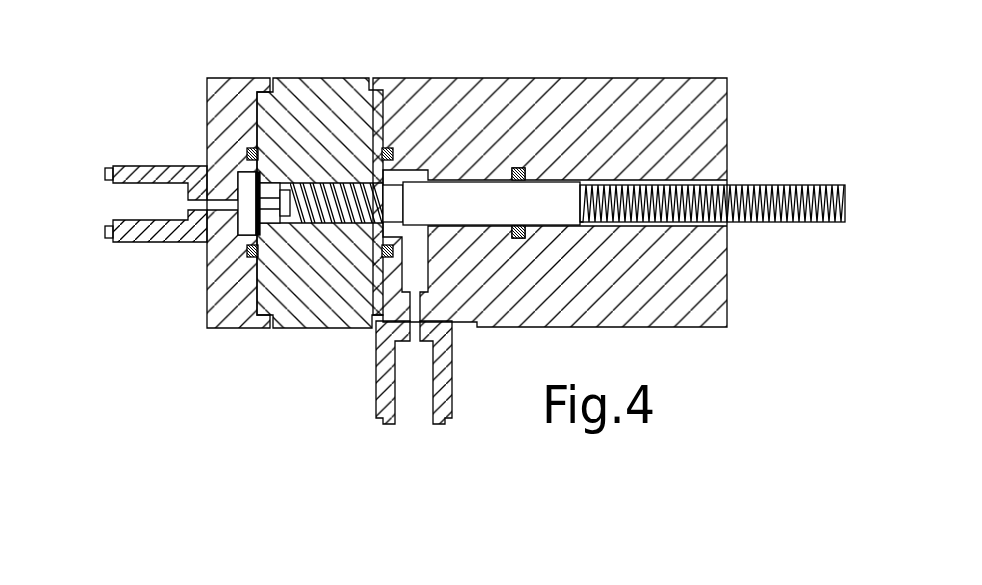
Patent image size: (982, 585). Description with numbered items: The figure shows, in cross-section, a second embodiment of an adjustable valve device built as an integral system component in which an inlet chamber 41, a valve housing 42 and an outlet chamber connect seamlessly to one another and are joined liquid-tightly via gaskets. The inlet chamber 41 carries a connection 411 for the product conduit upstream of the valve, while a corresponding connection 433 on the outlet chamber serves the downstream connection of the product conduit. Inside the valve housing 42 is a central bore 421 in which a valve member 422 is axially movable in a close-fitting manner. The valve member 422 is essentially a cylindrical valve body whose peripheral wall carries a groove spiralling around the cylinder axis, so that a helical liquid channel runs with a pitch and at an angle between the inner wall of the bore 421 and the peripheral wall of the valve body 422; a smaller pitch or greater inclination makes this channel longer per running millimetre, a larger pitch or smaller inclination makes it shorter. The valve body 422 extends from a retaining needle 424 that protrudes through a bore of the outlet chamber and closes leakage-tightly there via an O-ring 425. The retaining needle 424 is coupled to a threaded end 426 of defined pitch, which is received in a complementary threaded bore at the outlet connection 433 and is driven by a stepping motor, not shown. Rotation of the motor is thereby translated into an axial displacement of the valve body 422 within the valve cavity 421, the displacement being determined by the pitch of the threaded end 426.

The inlet chamber 41 is at (222, 108).
The valve housing 42 is at (303, 98).
The connection 411 is at (123, 197).
The central bore 421 is at (289, 228).
The valve member 422 is at (353, 190).
The retaining needle 424 is at (485, 196).
The O-ring 425 is at (523, 170).
The threaded end 426 is at (812, 185).
The connection 433 is at (720, 223).